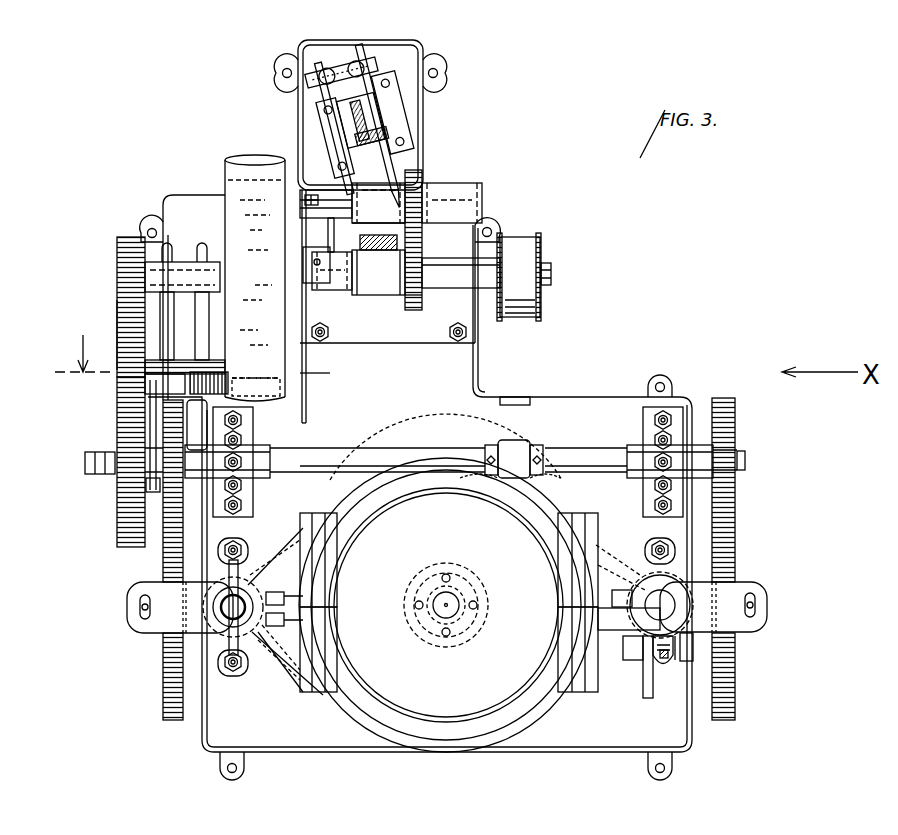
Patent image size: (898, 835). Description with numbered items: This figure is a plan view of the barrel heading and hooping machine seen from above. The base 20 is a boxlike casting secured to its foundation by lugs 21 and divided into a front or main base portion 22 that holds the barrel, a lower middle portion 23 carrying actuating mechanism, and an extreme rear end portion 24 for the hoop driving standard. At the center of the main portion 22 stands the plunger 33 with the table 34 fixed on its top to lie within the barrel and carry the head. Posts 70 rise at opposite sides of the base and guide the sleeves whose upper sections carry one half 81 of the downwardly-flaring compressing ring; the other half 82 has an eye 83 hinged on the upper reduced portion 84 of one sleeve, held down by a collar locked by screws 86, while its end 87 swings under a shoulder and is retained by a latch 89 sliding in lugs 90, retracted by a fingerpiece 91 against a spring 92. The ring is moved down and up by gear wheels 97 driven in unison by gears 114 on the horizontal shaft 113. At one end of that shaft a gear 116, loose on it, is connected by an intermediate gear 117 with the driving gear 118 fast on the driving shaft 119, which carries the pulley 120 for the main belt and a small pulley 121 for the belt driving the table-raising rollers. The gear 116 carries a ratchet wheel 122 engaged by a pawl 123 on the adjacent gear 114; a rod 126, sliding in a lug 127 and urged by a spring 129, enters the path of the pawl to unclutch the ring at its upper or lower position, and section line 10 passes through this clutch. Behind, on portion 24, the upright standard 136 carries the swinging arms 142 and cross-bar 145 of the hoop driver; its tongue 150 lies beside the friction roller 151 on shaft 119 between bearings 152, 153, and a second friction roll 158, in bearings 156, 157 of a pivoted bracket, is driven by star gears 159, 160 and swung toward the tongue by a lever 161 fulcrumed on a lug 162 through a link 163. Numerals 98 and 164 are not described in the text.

The section line 10 is at (194, 360).
The base 20 is at (525, 386).
The lugs 21 is at (150, 224).
The front or main base portion 22 is at (420, 473).
The lower middle portion 23 is at (387, 299).
The extreme rear end portion 24 is at (360, 115).
The plunger 33 is at (432, 616).
The table 34 is at (446, 605).
The posts 70 is at (215, 607).
The one half of downwardly-flaring ring 81 is at (437, 487).
The other half of ring 82 is at (440, 736).
The eye or hinge 83 is at (259, 668).
The upper reduced portion 84 is at (260, 560).
The screws 86 is at (225, 565).
The end of swinging half 87 is at (615, 640).
The latch 89 is at (690, 661).
The lugs 90 is at (633, 661).
The fingerpiece 91 is at (648, 699).
The spring 92 is at (654, 690).
The gear wheels 97 is at (163, 674).
The pin 98 is at (679, 660).
The shaft 113 is at (85, 463).
The gears 114 is at (168, 498).
The gear 116 is at (120, 420).
The intermediate gear 117 is at (123, 338).
The driving gear 118 is at (123, 270).
The shaft 119 is at (551, 277).
The pulley 120 is at (255, 278).
The small pulley 121 is at (527, 238).
The ratchet or toothed wheel 122 is at (146, 485).
The pawl 123 is at (150, 400).
The rod 126 is at (196, 425).
The lug 127 is at (185, 377).
The spring 129 is at (219, 372).
The upright standard 136 is at (363, 128).
The upper swinging arms 142 is at (318, 92).
The cross-bar 145 is at (349, 62).
The tongue 150 is at (470, 216).
The friction roller 151 is at (378, 265).
The bearing 152 is at (333, 290).
The bearing 153 is at (444, 296).
The bearing 156 is at (450, 206).
The bearing 157 is at (303, 188).
The second friction roll 158 is at (388, 204).
The star gear 159 is at (412, 308).
The star gear 160 is at (410, 192).
The lever 161 is at (307, 388).
The lug 162 is at (300, 296).
The link 163 is at (310, 238).
The block 164 is at (305, 207).